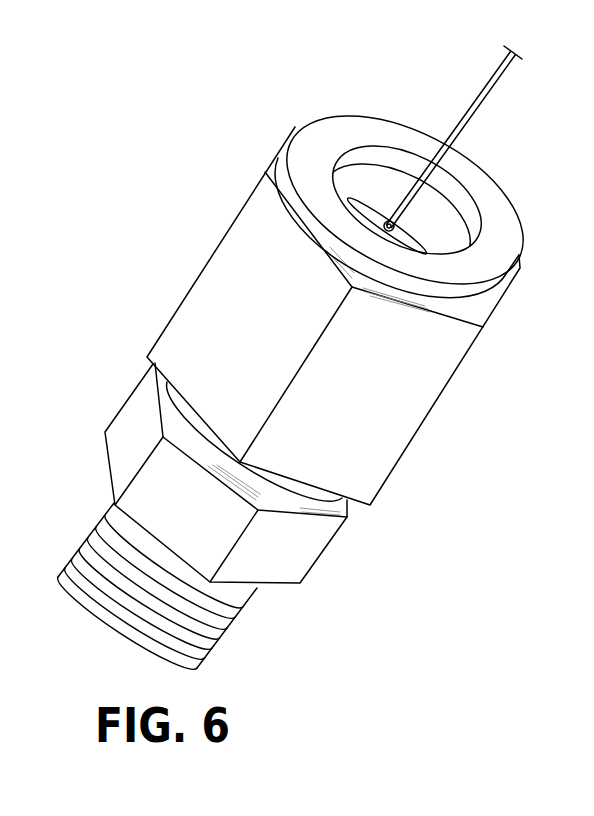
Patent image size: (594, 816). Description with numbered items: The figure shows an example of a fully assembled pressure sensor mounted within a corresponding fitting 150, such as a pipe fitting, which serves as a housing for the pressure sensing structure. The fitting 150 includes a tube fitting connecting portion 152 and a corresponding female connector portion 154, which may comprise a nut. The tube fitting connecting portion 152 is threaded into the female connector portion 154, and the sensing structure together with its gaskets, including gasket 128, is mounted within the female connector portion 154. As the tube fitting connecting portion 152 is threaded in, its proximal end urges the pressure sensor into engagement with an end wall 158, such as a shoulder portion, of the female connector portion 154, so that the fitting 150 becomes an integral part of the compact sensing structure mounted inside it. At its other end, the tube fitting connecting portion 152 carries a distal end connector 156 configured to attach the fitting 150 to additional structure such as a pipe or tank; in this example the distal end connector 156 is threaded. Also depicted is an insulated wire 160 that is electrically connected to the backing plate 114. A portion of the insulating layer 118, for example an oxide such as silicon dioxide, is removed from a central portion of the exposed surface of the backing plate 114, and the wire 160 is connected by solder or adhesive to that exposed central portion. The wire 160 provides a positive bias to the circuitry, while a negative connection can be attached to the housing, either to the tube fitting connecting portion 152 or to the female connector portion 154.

The fitting 150 is at (232, 122).
The female connector portion 154 is at (415, 440).
The backing plate 114 is at (408, 238).
The gasket 128 is at (410, 219).
The insulating layer 118 is at (372, 212).
The end wall 158 is at (388, 193).
The insulated wire 160 is at (478, 112).
The tube fitting connecting portion 152 is at (322, 552).
The distal end connector 156 is at (223, 634).